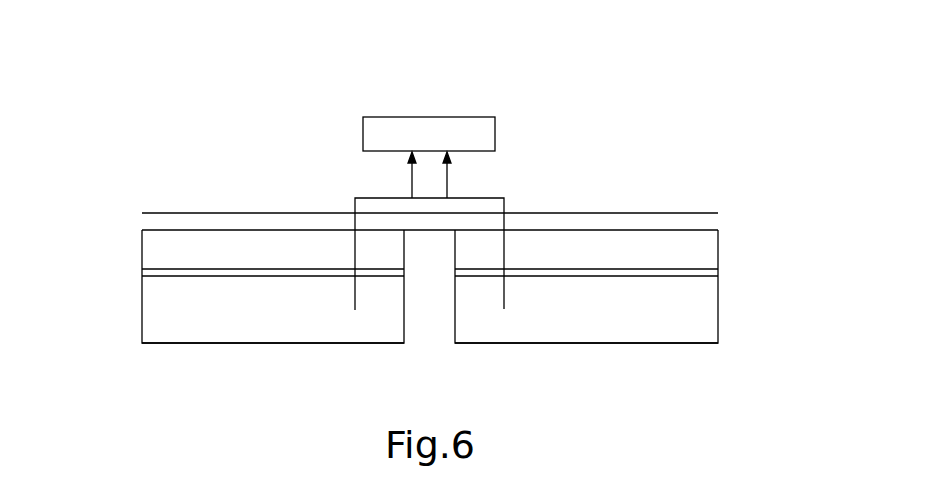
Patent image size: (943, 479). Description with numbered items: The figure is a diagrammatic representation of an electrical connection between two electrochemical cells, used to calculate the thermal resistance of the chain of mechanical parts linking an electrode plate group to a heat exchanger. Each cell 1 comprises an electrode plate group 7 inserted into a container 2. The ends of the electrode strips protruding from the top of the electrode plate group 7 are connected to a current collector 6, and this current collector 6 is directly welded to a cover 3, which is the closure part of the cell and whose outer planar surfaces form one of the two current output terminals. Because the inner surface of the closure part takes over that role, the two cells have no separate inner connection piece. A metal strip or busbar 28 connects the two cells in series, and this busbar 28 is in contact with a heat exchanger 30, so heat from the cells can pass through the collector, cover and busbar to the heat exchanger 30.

The cell 1 is at (137, 153).
The container 2 is at (142, 312).
The cover 3 is at (142, 250).
The current collector 6 is at (142, 272).
The electrode plate group 7 is at (230, 322).
The metal strip or busbar 28 is at (622, 213).
The heat exchanger 30 is at (495, 133).